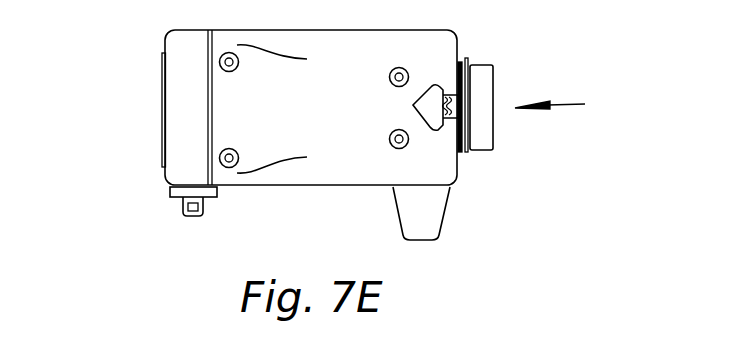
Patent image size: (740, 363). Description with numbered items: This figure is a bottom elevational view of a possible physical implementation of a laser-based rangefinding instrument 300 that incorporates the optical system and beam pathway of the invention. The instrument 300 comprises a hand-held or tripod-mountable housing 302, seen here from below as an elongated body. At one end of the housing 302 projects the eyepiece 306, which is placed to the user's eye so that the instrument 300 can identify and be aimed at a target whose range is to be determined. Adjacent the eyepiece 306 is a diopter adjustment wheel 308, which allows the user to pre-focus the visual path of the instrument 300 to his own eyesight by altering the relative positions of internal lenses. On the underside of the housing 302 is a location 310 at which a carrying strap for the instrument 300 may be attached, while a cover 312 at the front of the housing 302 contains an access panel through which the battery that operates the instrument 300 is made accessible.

The laser-based rangefinding instrument 300 is at (198, 279).
The housing 302 is at (335, 30).
The eyepiece 306 is at (580, 105).
The diopter adjustment wheel 308 is at (462, 108).
The carrying strap attachment location 310 is at (448, 208).
The cover 312 is at (165, 178).